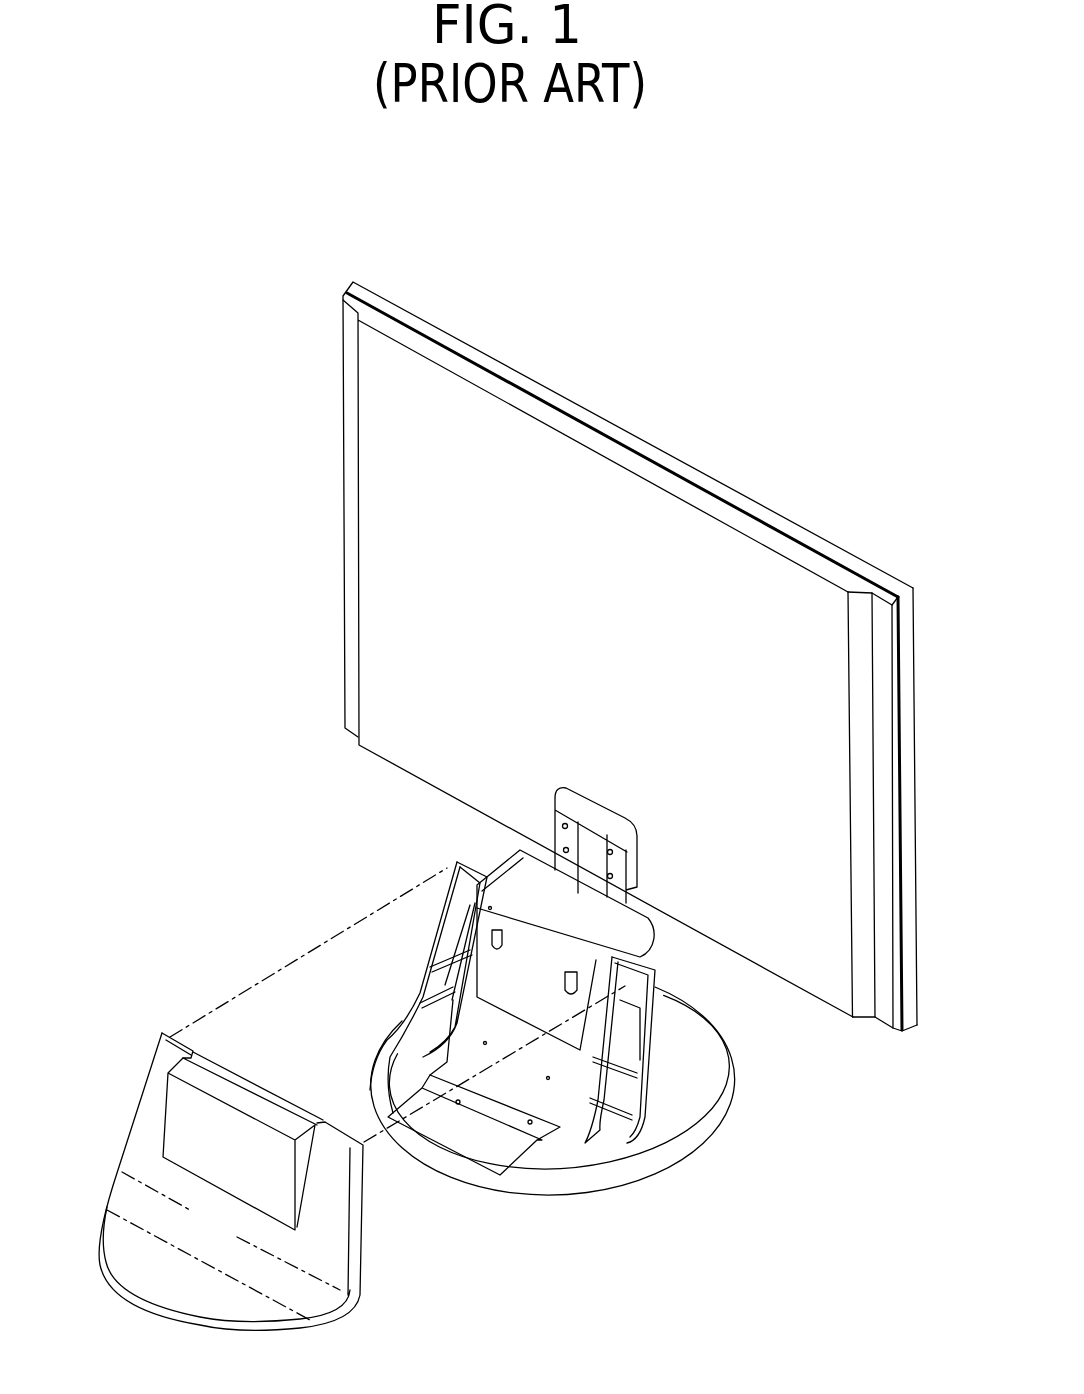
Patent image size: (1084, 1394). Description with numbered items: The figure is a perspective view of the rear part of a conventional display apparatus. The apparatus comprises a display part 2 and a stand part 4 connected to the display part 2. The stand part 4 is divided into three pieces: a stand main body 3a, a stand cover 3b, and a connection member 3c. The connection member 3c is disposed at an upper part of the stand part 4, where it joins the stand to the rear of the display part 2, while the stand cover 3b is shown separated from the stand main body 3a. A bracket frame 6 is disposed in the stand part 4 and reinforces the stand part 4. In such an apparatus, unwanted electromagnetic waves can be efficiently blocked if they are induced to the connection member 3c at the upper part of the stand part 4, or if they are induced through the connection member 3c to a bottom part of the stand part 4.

The display part 2 is at (326, 533).
The stand part 4 is at (262, 877).
The stand main body 3a is at (435, 928).
The stand cover 3b is at (162, 1035).
The connection member 3c is at (562, 841).
The bracket frame 6 is at (557, 1156).